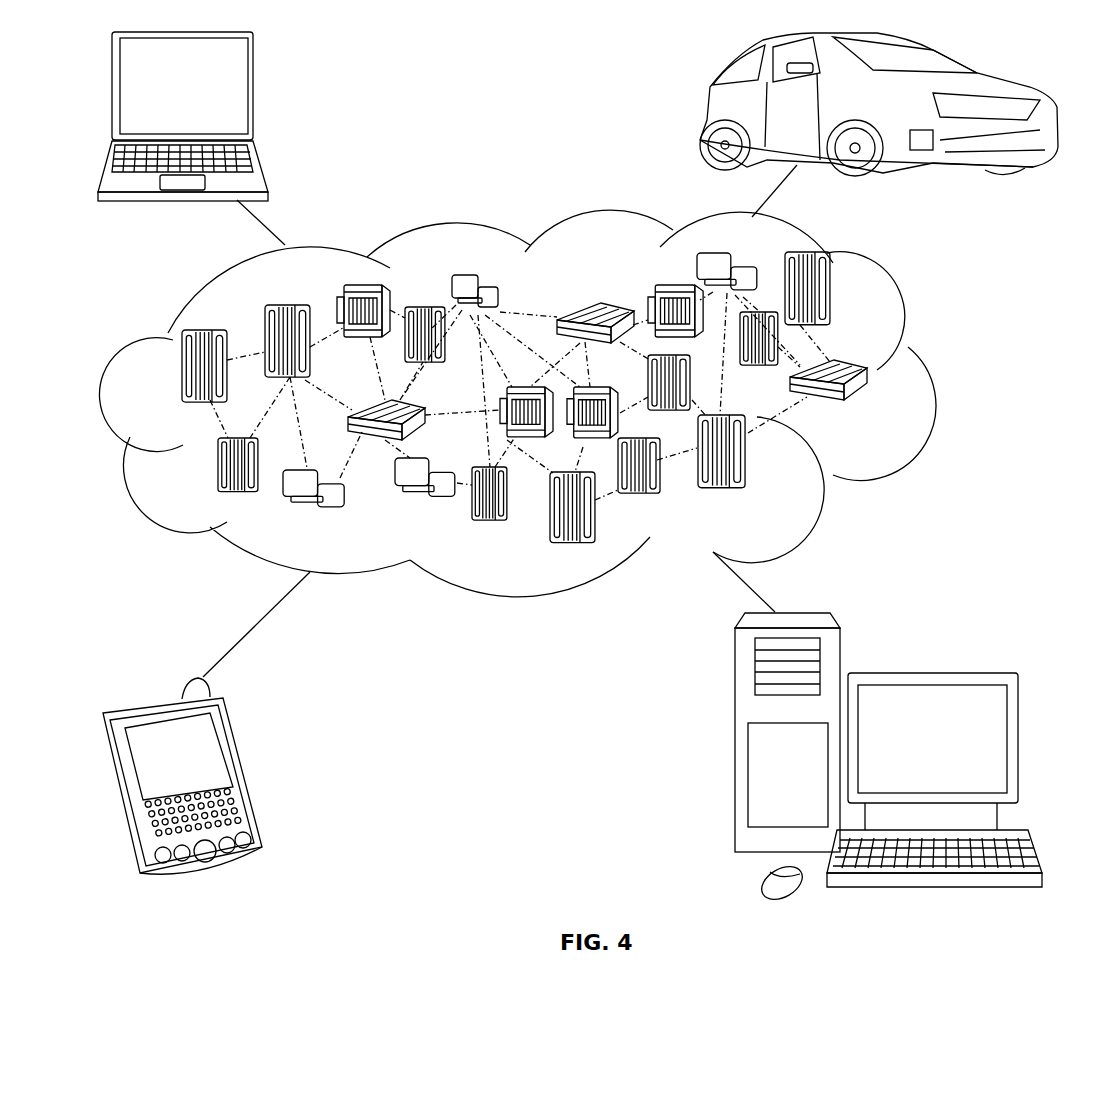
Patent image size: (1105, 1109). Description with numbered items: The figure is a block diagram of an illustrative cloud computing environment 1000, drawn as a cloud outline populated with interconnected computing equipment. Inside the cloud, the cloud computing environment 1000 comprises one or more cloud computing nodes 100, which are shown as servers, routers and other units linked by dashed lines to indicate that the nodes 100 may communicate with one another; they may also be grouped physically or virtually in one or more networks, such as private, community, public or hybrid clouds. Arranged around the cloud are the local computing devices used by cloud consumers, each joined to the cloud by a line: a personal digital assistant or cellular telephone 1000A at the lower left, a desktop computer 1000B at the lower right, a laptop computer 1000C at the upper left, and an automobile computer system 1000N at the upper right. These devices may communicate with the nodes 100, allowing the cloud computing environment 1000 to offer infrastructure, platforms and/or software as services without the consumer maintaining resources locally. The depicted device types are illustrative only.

The cloud computing nodes 100 is at (925, 427).
The cloud computing environment 1000 is at (932, 375).
The personal digital assistant (PDA) or cellular telephone 1000A is at (247, 768).
The desktop computer 1000B is at (943, 648).
The laptop computer 1000C is at (257, 93).
The automobile computer system 1000N is at (705, 110).